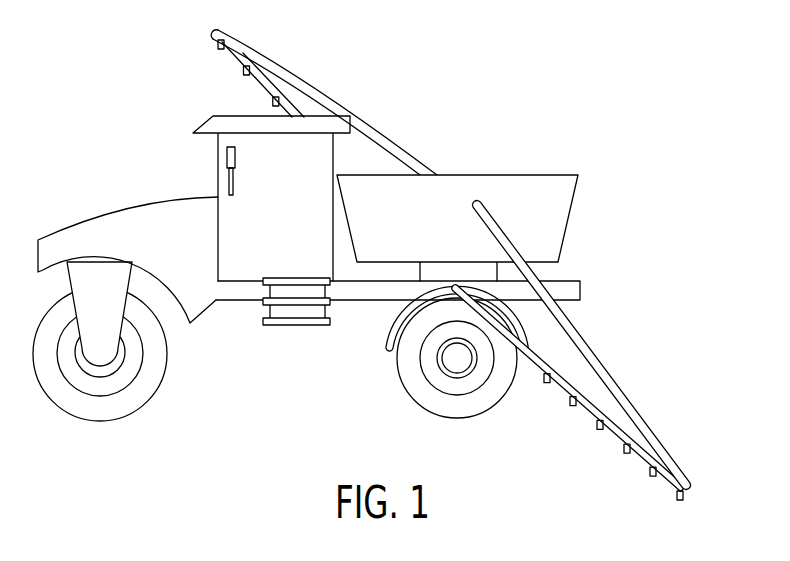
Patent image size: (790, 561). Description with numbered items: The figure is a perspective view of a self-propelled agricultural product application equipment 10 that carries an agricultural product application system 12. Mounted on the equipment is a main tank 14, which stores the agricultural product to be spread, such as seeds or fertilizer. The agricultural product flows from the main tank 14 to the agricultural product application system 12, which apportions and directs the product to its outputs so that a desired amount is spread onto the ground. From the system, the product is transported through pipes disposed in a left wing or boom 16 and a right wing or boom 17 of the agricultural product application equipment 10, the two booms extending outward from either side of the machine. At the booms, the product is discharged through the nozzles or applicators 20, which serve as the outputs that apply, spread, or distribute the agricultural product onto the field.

The agricultural product application equipment 10 is at (97, 98).
The agricultural product application system 12 is at (420, 272).
The main tank 14 is at (562, 216).
The left wing or boom 16 is at (604, 372).
The right wing or boom 17 is at (306, 79).
The nozzles or applicators 20 is at (688, 495).